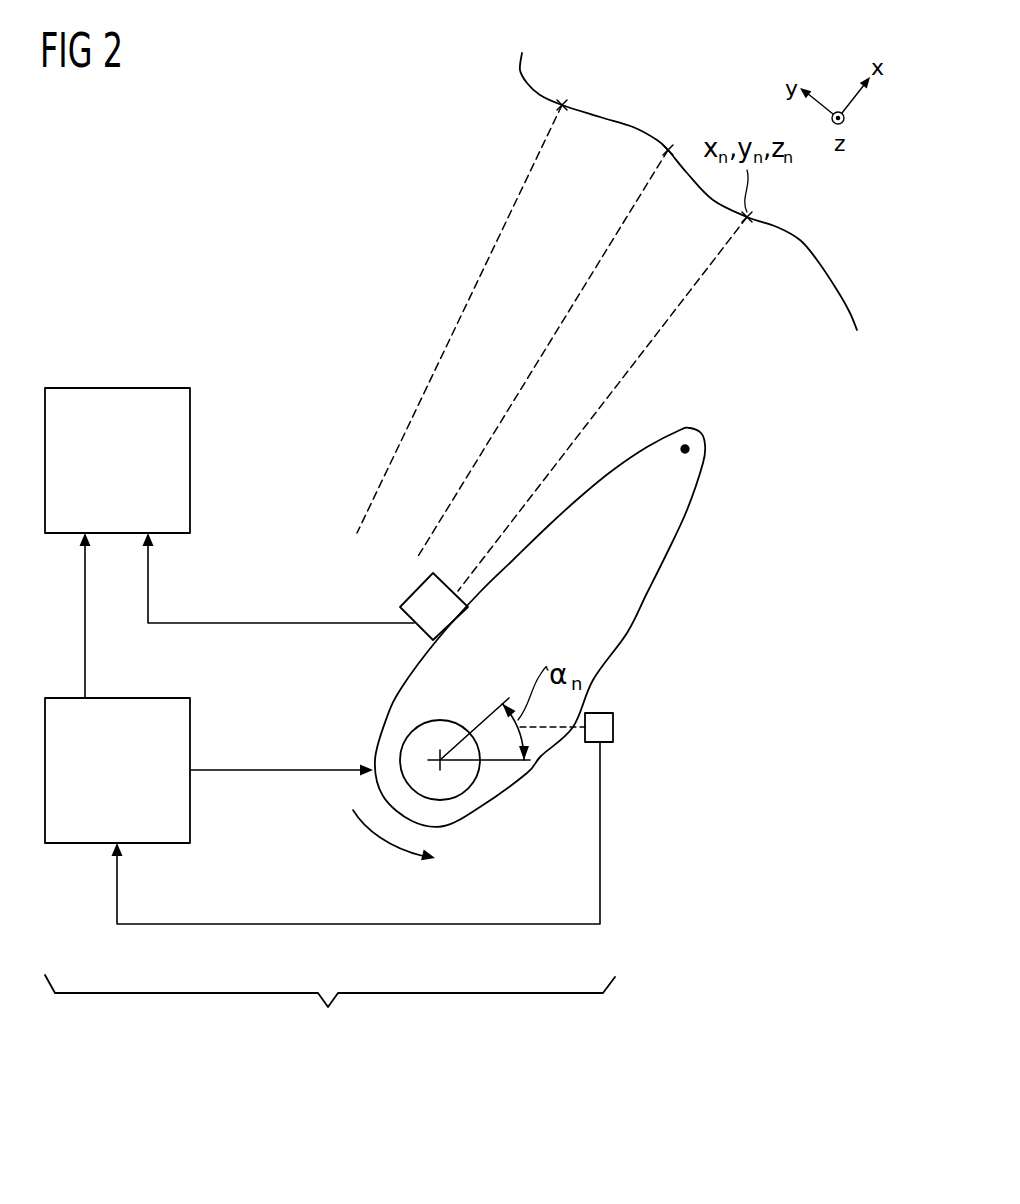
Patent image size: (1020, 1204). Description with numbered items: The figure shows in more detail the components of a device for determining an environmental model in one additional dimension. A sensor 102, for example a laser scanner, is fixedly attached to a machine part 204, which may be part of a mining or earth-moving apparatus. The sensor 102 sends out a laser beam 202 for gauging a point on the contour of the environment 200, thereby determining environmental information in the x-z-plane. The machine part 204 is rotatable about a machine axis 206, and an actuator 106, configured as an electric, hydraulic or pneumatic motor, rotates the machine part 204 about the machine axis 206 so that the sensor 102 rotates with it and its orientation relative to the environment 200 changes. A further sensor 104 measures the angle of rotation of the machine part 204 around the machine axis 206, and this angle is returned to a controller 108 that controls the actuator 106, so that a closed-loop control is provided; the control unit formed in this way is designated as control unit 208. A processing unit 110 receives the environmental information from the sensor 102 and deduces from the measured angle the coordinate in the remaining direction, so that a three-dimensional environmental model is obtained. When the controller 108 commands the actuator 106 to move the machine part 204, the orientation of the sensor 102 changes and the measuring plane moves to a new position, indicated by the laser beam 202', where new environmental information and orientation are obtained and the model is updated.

The sensor 102 is at (418, 590).
The further sensor 104 is at (613, 727).
The actuator 106 is at (400, 745).
The controller 108 is at (75, 843).
The processing unit 110 is at (118, 388).
The environment 200 is at (820, 250).
The laser beam 202 is at (605, 401).
The laser beam 202' is at (526, 329).
The machine part 204 is at (687, 510).
The machine axis 206 is at (443, 763).
The control unit 208 is at (330, 1011).